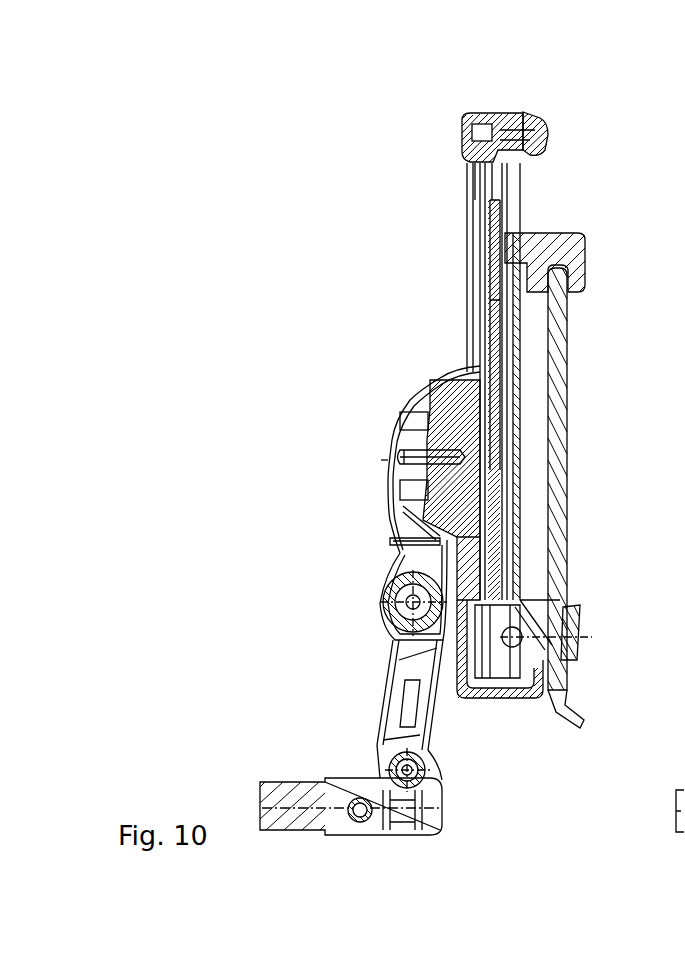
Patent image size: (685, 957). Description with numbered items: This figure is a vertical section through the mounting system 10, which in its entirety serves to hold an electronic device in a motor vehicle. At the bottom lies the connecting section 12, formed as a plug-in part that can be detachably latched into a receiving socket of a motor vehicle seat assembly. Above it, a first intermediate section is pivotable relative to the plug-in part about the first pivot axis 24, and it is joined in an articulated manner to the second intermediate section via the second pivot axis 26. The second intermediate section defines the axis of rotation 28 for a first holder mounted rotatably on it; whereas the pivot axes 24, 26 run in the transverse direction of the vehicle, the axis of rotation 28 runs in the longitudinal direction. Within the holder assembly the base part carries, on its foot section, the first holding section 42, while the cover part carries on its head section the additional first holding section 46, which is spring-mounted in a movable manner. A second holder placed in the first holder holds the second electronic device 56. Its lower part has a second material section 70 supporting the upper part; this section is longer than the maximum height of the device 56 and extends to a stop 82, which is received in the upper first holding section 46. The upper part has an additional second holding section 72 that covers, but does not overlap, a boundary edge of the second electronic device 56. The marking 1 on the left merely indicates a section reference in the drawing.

The mounting system 10 is at (638, 99).
The connecting section 12 is at (410, 858).
The first pivot axis 24 is at (427, 777).
The second pivot axis 26 is at (385, 638).
The axis of rotation 28 is at (415, 483).
The first holding section 42 is at (531, 693).
The additional first holding section 46 is at (547, 130).
The second electronic device 56 is at (560, 417).
The second material section 70 is at (500, 218).
The additional second holding section 72 is at (582, 236).
The stop 82 is at (520, 122).
The section indicator 1 is at (310, 456).